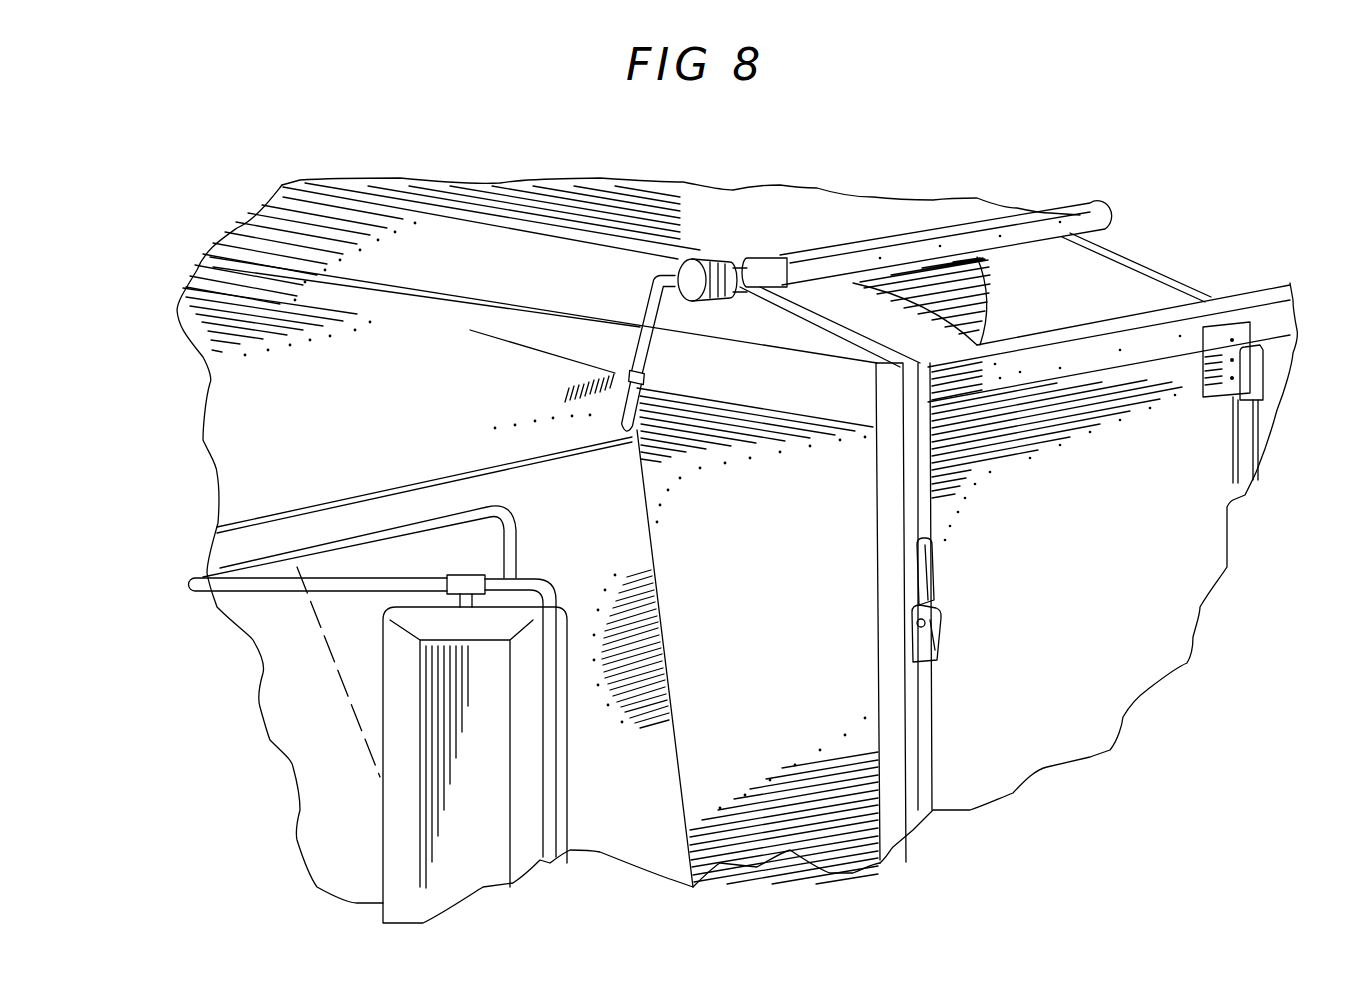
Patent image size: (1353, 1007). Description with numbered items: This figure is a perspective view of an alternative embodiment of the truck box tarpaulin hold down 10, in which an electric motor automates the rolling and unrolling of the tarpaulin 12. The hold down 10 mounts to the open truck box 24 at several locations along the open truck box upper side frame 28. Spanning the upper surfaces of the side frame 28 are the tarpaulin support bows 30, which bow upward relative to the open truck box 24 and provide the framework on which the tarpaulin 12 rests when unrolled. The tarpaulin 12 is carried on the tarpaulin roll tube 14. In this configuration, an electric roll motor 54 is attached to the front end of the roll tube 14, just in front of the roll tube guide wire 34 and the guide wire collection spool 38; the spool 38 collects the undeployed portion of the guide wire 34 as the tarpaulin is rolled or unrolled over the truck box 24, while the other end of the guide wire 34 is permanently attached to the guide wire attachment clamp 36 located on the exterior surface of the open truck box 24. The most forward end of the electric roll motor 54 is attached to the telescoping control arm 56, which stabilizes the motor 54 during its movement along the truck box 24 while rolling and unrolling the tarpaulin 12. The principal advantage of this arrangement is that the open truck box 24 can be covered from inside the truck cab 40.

The truck box tarpaulin hold down 10 is at (1265, 375).
The tarpaulin 12 is at (910, 215).
The tarpaulin roll tube 14 is at (1110, 207).
The open truck box 24 is at (1203, 538).
The open truck box upper side frame 28 is at (1287, 322).
The tarpaulin support bow 30 is at (1155, 270).
The roll tube guide wire 34 is at (838, 312).
The guide wire attachment clamp 36 is at (953, 625).
The guide wire collection spool 38 is at (767, 252).
The truck cab 40 is at (290, 463).
The electric roll motor 54 is at (697, 250).
The telescoping control arm 56 is at (645, 300).